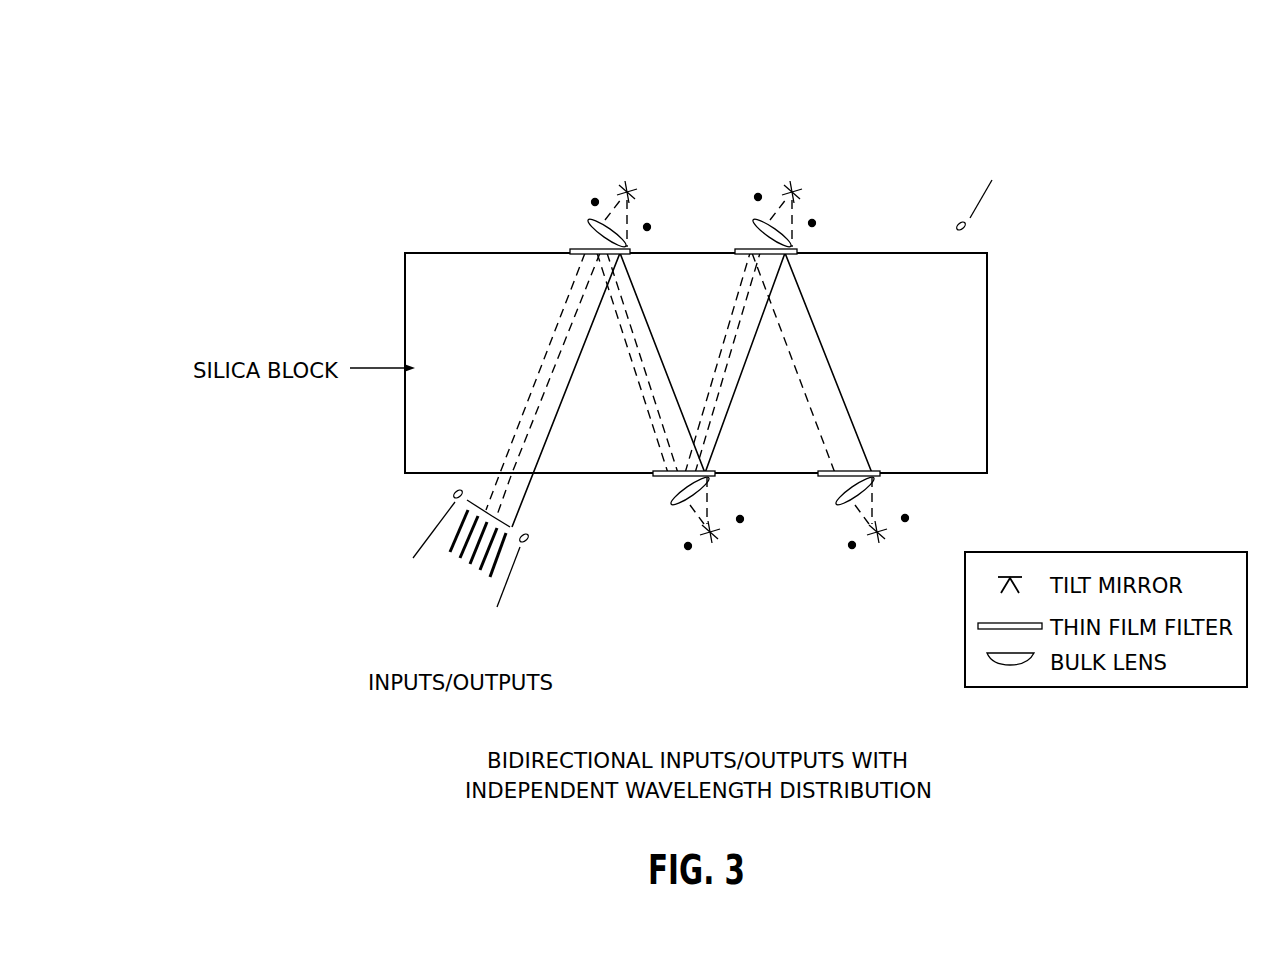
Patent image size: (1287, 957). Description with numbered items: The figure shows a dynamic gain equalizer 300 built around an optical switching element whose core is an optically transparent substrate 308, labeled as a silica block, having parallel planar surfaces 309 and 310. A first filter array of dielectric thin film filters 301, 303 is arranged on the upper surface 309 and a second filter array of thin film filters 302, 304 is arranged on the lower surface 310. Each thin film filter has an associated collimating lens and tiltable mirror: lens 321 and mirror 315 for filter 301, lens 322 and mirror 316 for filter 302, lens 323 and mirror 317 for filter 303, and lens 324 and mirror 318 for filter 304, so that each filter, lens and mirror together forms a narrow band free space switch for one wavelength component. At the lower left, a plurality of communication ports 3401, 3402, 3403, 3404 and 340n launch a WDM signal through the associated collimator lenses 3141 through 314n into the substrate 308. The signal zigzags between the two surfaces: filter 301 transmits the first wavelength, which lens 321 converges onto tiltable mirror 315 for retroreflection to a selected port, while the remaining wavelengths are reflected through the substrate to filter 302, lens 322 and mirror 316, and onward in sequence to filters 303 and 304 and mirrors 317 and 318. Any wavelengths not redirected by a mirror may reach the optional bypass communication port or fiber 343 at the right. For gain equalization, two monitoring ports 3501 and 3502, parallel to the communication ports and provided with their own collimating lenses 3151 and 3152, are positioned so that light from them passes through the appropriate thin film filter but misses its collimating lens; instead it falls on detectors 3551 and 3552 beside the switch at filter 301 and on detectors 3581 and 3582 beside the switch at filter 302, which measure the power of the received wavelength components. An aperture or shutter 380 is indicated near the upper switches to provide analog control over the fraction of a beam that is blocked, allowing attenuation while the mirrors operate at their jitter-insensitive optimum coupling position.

The dynamic gain equalizer 300 is at (358, 203).
The thin film filter 301 is at (572, 250).
The thin film filter 302 is at (655, 477).
The thin film filter 303 is at (738, 250).
The thin film filter 304 is at (822, 477).
The optically transparent substrate 308 is at (405, 423).
The planar surface 309 is at (440, 252).
The planar surface 310 is at (957, 475).
The collimator lens 3141 is at (479, 503).
The collimator lens 314n is at (514, 527).
The tiltable mirror 315 is at (632, 194).
The collimating lens 3151 is at (454, 493).
The collimating lens 3152 is at (527, 545).
The tiltable mirror 316 is at (715, 532).
The tiltable mirror 317 is at (797, 191).
The tiltable mirror 318 is at (884, 532).
The collimating lens 321 is at (598, 222).
The collimating lens 322 is at (677, 503).
The collimating lens 323 is at (760, 222).
The collimating lens 324 is at (848, 506).
The communication port 3401 is at (461, 531).
The communication port 3402 is at (468, 550).
The communication port 3403 is at (475, 560).
The communication port 3404 is at (484, 566).
The communication port 340n is at (493, 572).
The bypass communication port 343 is at (980, 208).
The monitoring port 3501 is at (418, 555).
The monitoring port 3502 is at (508, 580).
The detector 3551 is at (595, 199).
The detector 3552 is at (650, 226).
The detector 3581 is at (688, 549).
The detector 3582 is at (748, 519).
The aperture or shutter 380 is at (782, 197).